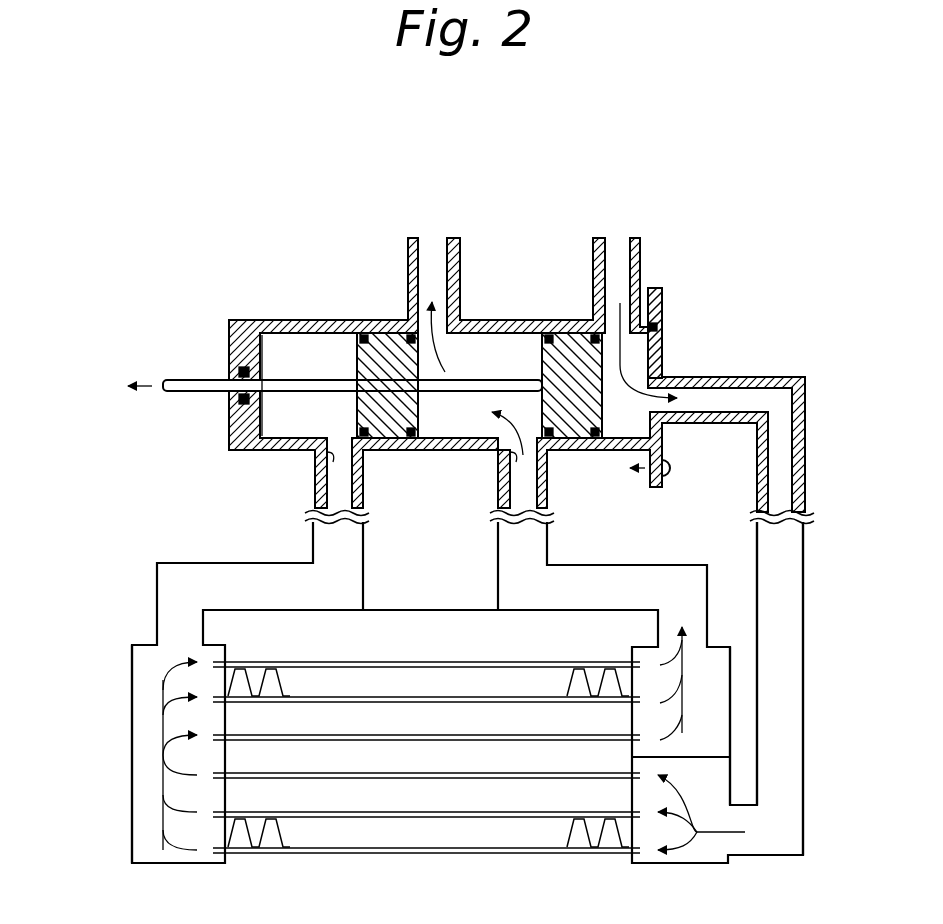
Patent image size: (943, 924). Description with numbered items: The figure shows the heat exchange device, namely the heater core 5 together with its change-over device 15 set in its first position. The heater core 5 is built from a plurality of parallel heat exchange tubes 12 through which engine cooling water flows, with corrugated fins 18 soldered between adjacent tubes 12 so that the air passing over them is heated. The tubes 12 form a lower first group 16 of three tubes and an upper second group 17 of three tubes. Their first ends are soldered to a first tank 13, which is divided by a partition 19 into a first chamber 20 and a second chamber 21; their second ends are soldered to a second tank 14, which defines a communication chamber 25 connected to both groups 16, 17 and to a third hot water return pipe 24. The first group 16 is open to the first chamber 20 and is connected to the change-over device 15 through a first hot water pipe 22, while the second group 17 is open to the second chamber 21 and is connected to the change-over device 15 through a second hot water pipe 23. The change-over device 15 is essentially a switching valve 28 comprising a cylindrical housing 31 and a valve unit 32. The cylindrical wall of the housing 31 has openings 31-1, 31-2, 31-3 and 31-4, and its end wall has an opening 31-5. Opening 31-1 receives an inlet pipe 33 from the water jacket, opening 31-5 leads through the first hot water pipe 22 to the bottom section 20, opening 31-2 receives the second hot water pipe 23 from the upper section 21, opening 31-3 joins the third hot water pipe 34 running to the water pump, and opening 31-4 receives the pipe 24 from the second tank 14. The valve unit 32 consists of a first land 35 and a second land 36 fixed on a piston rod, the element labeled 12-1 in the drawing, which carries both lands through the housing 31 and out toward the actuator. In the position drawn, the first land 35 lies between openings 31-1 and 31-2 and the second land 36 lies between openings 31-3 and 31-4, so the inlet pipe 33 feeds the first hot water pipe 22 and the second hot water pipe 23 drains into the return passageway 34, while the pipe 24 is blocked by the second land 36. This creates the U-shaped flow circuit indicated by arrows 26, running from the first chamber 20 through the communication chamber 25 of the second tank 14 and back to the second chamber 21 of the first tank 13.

The heater core 5 is at (140, 630).
The heat exchange tubes 12 is at (288, 860).
The valve 12-1 is at (293, 382).
The first tank 13 is at (730, 700).
The second tank 14 is at (130, 672).
The change-over device 15 is at (667, 243).
The first group of heat exchange tubes 16 is at (410, 780).
The second group of heat exchange tubes 17 is at (430, 735).
The corrugated fins 18 is at (582, 843).
The partition 19 is at (707, 752).
The first chamber 20 is at (720, 790).
The second chamber 21 is at (718, 665).
The first hot water pipe 22 is at (790, 590).
The second hot water pipe 23 is at (592, 582).
The third hot water return pipe 24 is at (350, 580).
The communication chamber 25 is at (140, 805).
The first U-shape flow circuit 26 is at (163, 758).
The switching valve 28 is at (222, 332).
The cylindrical housing 31 is at (243, 318).
The opening 31-1 is at (662, 358).
The opening 31-2 is at (500, 450).
The opening 31-3 is at (455, 335).
The opening 31-4 is at (315, 478).
The end wall opening 31-5 is at (683, 380).
The valve unit 32 is at (325, 366).
The inlet pipe 33 is at (593, 262).
The third hot water pipe 34 is at (408, 258).
The first valve member 35 is at (542, 355).
The second valve member 36 is at (358, 355).